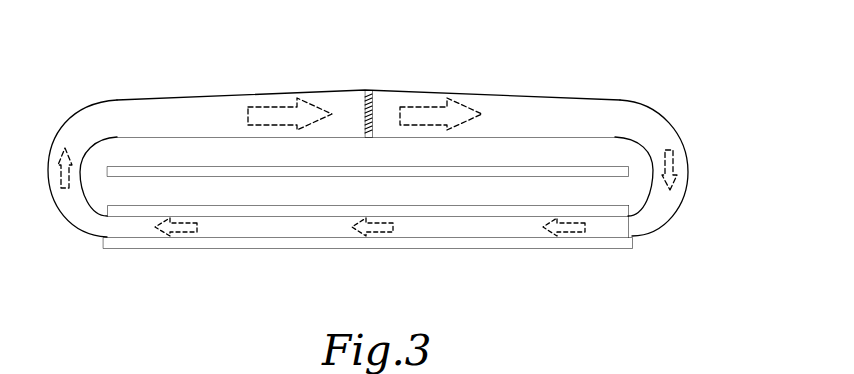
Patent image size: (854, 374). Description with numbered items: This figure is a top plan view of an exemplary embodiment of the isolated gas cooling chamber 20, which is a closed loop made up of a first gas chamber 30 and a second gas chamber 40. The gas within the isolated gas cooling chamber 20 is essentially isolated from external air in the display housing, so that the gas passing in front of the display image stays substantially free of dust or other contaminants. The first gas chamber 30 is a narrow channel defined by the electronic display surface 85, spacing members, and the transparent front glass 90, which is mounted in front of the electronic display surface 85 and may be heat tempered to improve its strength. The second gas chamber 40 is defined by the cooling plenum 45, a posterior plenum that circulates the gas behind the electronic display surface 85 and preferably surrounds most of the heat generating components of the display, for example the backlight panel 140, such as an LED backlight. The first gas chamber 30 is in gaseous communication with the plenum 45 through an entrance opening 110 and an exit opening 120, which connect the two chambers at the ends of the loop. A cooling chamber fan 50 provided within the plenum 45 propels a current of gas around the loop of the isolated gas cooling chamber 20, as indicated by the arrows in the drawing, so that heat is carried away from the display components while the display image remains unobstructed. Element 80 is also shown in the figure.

The isolated gas cooling chamber 20 is at (721, 235).
The first gas chamber 30 is at (432, 238).
The second gas chamber 40 is at (519, 110).
The cooling plenum 45 is at (527, 97).
The cooling chamber fan 50 is at (359, 127).
The lower plate 80 is at (168, 205).
The electronic display surface 85 is at (482, 216).
The front glass 90 is at (335, 248).
The entrance opening 110 is at (616, 235).
The exit opening 120 is at (117, 231).
The backlight panel 140 is at (218, 166).